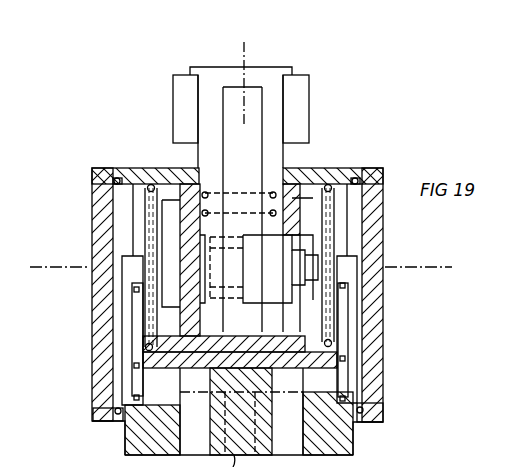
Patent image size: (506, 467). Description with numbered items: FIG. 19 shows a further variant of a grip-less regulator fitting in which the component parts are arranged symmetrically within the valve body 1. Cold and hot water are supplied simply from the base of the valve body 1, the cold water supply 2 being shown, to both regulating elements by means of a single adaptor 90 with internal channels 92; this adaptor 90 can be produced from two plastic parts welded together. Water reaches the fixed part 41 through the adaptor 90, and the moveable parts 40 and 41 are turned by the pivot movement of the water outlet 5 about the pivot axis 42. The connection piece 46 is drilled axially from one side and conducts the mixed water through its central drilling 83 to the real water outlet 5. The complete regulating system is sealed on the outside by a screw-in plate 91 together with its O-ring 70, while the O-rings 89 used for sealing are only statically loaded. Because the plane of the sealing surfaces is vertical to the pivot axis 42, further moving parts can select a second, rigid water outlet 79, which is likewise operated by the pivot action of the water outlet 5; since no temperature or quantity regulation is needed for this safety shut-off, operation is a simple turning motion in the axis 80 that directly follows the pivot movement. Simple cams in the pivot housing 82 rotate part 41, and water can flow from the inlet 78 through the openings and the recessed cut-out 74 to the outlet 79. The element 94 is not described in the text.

The valve body 1 is at (335, 437).
The cold water supply 2 is at (288, 440).
The water outlet 5 is at (296, 93).
The moveable part 40 is at (306, 197).
The fixed part 41 is at (343, 233).
The pivot axis 42 is at (440, 266).
The connection piece 46 is at (262, 70).
The O-ring 70 is at (100, 415).
The recessed cut-out 74 is at (142, 252).
The inlet 78 is at (250, 377).
The second rigid water outlet 79 is at (196, 448).
The axis 80 is at (243, 50).
The pivot housing 82 is at (137, 360).
The central drilling 83 is at (236, 140).
The O-rings 89 is at (112, 184).
The adaptor 90 is at (132, 192).
The screw-in plate 91 is at (100, 300).
The internal channel 92 is at (350, 333).
The sleeve 94 is at (123, 333).